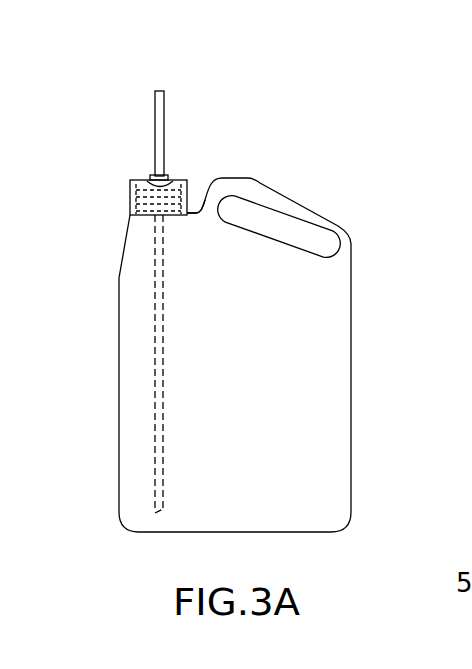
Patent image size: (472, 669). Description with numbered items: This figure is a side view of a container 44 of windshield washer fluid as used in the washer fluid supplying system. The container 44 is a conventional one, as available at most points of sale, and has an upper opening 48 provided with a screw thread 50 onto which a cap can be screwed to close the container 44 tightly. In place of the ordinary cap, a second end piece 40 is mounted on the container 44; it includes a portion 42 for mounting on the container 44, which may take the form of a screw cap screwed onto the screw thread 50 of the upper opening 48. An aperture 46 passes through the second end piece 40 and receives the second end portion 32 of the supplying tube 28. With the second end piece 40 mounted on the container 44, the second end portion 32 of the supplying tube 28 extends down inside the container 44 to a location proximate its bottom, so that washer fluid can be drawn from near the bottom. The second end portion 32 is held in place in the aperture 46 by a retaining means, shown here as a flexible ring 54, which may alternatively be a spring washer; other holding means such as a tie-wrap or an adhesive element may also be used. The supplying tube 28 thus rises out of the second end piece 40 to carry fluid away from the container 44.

The supplying tube 28 is at (173, 90).
The second end portion 32 is at (160, 455).
The second end piece 40 is at (118, 168).
The portion 42 is at (130, 207).
The container 44 is at (365, 377).
The aperture 46 is at (177, 180).
The upper opening 48 is at (130, 190).
The screw thread 50 is at (187, 197).
The flexible ring 54 is at (150, 182).